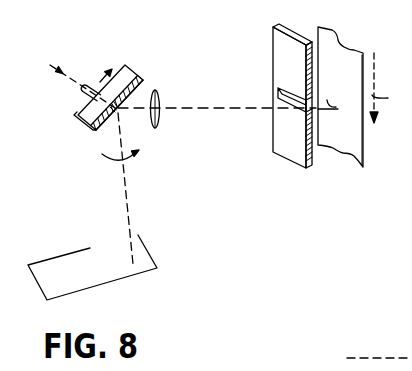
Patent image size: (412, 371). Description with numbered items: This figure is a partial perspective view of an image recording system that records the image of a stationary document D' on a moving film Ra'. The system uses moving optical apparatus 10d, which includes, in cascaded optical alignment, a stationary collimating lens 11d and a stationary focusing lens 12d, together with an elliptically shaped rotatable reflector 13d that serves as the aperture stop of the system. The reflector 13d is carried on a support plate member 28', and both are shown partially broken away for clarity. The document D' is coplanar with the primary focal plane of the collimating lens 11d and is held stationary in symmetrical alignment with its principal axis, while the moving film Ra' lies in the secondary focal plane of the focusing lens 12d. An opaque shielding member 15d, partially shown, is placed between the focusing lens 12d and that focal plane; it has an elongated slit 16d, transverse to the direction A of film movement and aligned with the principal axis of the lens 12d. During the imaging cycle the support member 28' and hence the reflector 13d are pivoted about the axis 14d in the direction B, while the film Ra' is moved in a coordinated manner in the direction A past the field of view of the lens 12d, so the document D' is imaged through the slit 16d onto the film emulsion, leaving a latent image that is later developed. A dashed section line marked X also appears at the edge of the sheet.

The moving optical apparatus 10d is at (152, 40).
The support plate member 28' is at (130, 93).
The elliptically shaped rotatable reflector 13d is at (118, 111).
The direction of pivoting B is at (80, 98).
The axis 14d is at (62, 66).
The focusing stationary lens 12d is at (161, 116).
The collimating stationary lens 11d is at (136, 155).
The stationary document D' is at (101, 267).
The opaque shielding member 15d is at (273, 48).
The elongated slit 16d is at (278, 91).
The moving film Ra' is at (341, 88).
The direction of film movement A is at (386, 88).
The section line X is at (379, 345).